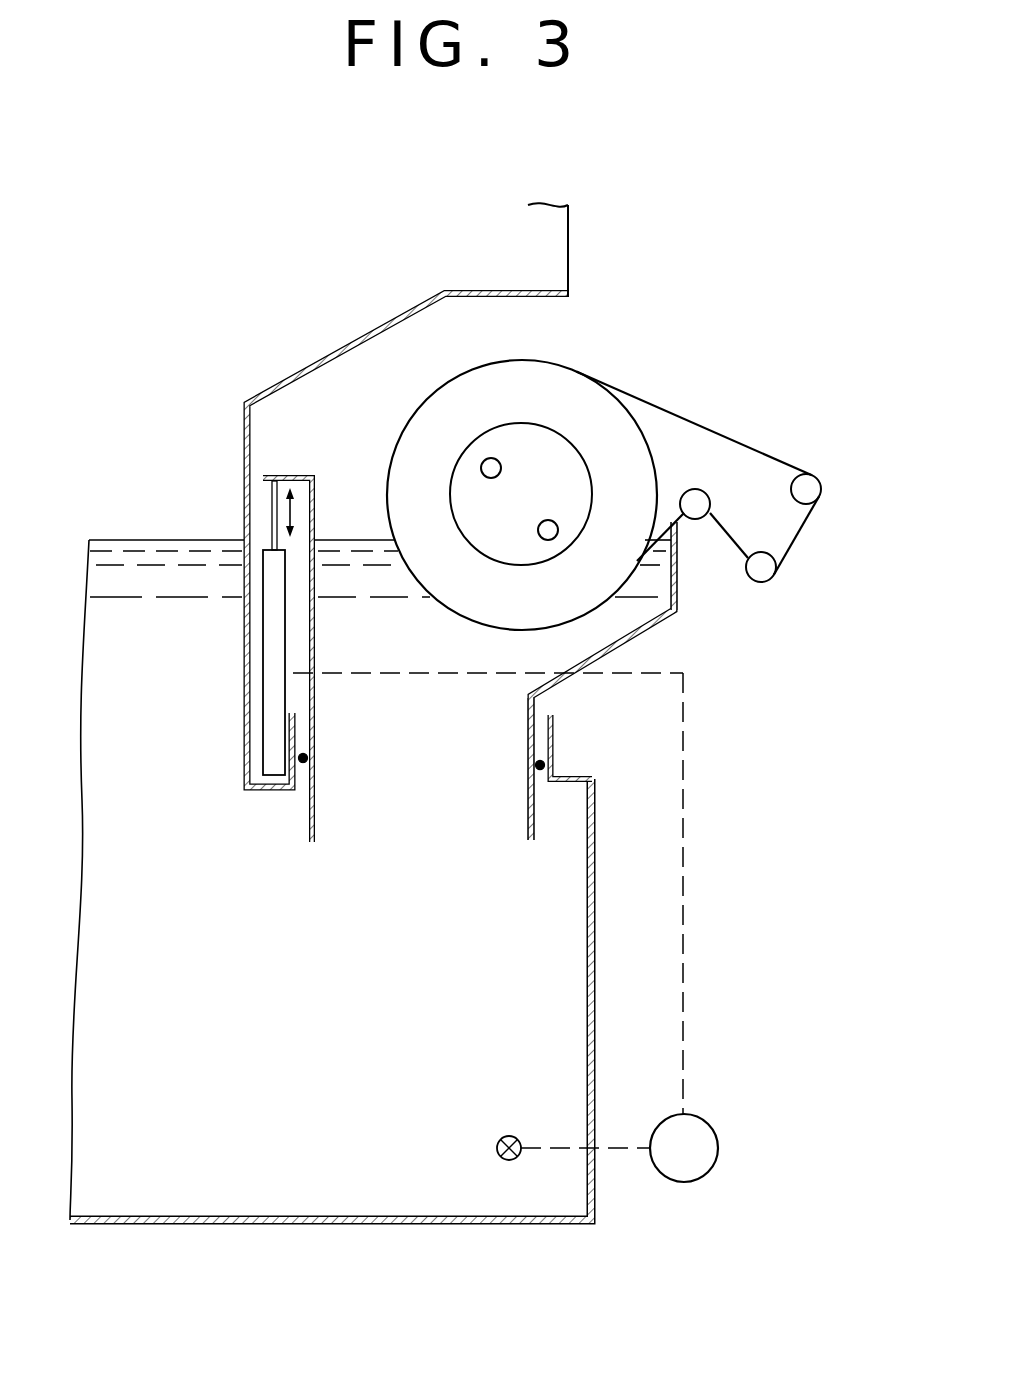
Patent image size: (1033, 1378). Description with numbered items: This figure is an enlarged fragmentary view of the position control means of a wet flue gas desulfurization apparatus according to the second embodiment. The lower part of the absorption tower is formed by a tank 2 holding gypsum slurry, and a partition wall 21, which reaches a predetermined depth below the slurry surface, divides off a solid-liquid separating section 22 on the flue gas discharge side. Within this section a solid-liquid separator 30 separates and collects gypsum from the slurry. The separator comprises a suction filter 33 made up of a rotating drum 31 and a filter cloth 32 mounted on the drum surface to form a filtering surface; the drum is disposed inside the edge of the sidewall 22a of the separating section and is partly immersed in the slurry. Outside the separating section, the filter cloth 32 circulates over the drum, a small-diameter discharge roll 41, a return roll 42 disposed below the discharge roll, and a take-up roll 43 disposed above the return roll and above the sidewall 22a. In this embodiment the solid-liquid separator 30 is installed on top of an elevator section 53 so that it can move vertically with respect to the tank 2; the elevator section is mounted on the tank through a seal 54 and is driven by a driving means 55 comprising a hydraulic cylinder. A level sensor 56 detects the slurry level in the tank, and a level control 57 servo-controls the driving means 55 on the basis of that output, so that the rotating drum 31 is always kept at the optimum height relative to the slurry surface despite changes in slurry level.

The tank 2 is at (596, 897).
The partition wall 21 is at (244, 432).
The solid-liquid separating section 22 is at (618, 707).
The sidewall 22a is at (678, 594).
The solid-liquid separator 30 is at (645, 418).
The rotating drum 31 is at (632, 416).
The filter cloth 32 is at (697, 472).
The suction filter 33 is at (603, 475).
The discharge roll 41 is at (812, 489).
The return roll 42 is at (764, 568).
The take-up roll 43 is at (697, 503).
The elevator section 53 is at (528, 822).
The seal 54 is at (308, 758).
The driving means 55 is at (267, 744).
The level sensor 56 is at (500, 1159).
The level control 57 is at (710, 1174).